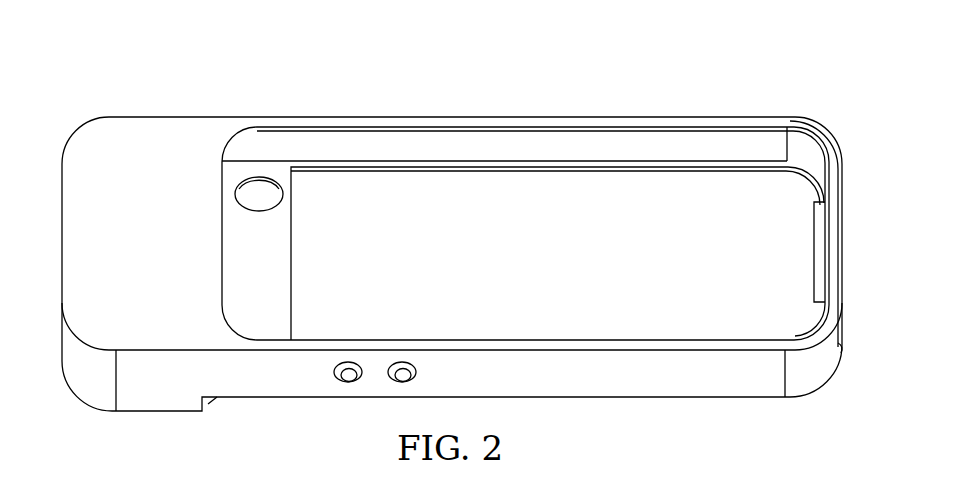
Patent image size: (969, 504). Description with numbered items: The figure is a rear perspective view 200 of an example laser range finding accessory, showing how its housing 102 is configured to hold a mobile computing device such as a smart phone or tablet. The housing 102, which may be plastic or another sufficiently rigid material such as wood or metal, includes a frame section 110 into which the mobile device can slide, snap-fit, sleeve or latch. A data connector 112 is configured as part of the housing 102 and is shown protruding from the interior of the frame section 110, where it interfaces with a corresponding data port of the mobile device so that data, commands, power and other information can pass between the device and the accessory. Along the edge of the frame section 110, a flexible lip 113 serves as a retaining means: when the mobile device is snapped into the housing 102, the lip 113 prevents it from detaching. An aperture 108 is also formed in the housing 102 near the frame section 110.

The rear perspective view 200 is at (629, 63).
The housing 102 is at (135, 413).
The aperture 108 is at (252, 210).
The frame section 110 is at (628, 148).
The data connector 112 is at (822, 262).
The flexible lip 113 is at (408, 127).